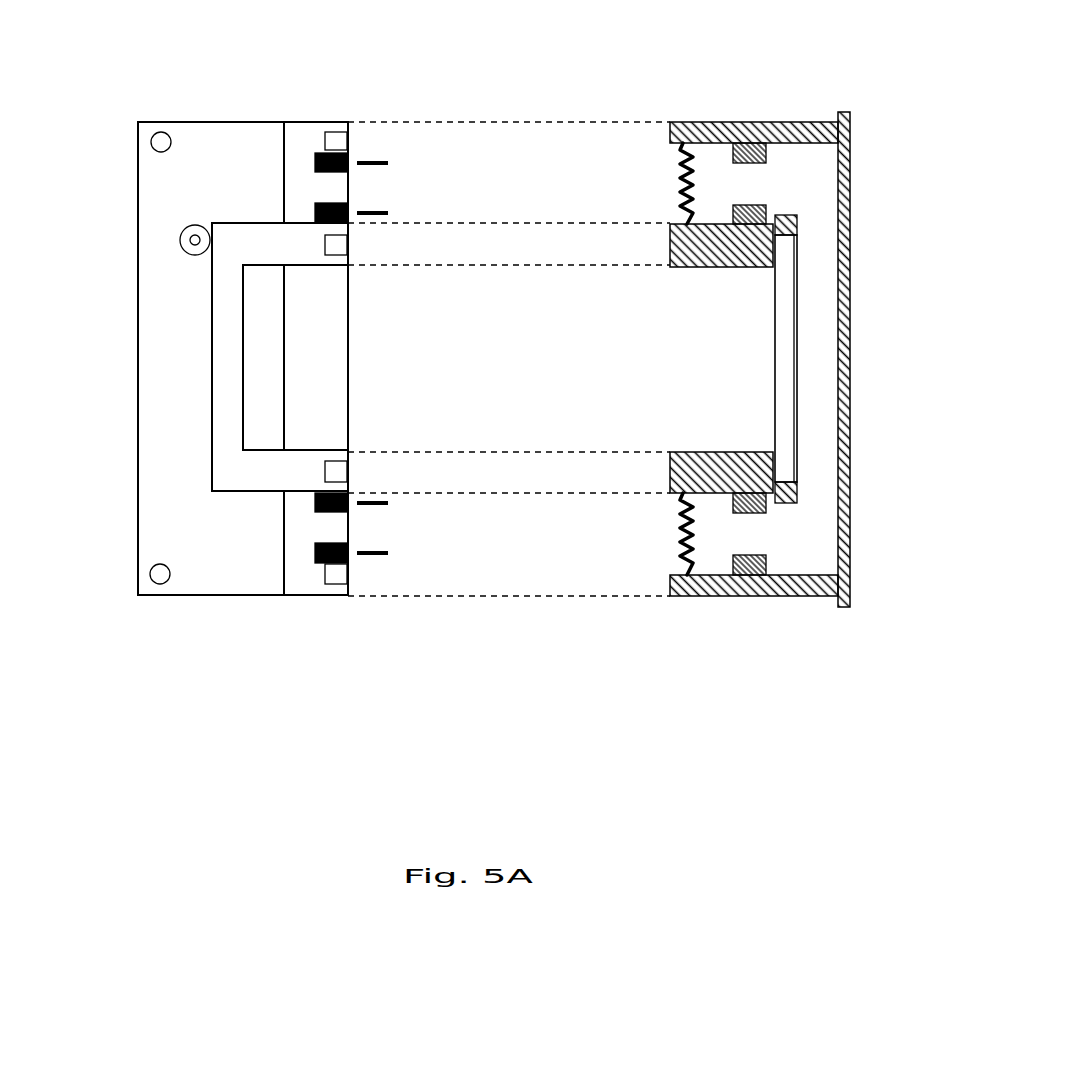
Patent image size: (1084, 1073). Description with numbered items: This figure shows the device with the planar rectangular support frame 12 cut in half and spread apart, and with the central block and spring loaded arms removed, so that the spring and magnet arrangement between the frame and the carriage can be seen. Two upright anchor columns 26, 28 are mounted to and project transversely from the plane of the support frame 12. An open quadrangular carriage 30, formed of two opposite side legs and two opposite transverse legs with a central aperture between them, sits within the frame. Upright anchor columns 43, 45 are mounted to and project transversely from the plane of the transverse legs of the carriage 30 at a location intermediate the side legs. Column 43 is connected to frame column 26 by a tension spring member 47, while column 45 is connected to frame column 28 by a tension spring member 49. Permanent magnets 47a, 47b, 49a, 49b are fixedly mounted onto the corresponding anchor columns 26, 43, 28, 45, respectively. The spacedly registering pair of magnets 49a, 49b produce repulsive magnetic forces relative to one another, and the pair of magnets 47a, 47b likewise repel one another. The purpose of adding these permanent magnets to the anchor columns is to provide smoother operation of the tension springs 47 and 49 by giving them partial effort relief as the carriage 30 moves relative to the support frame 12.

The support frame 12 is at (145, 279).
The upright anchor column 26 is at (810, 597).
The upright anchor column 28 is at (753, 128).
The open quadrangular carriage 30 is at (220, 352).
The upright anchor column 43 is at (713, 470).
The upright anchor column 45 is at (690, 245).
The tension spring member 47 is at (680, 523).
The permanent magnet 47a is at (767, 566).
The permanent magnet 47b is at (766, 512).
The tension spring member 49 is at (680, 163).
The permanent magnet 49a is at (733, 153).
The permanent magnet 49b is at (766, 208).